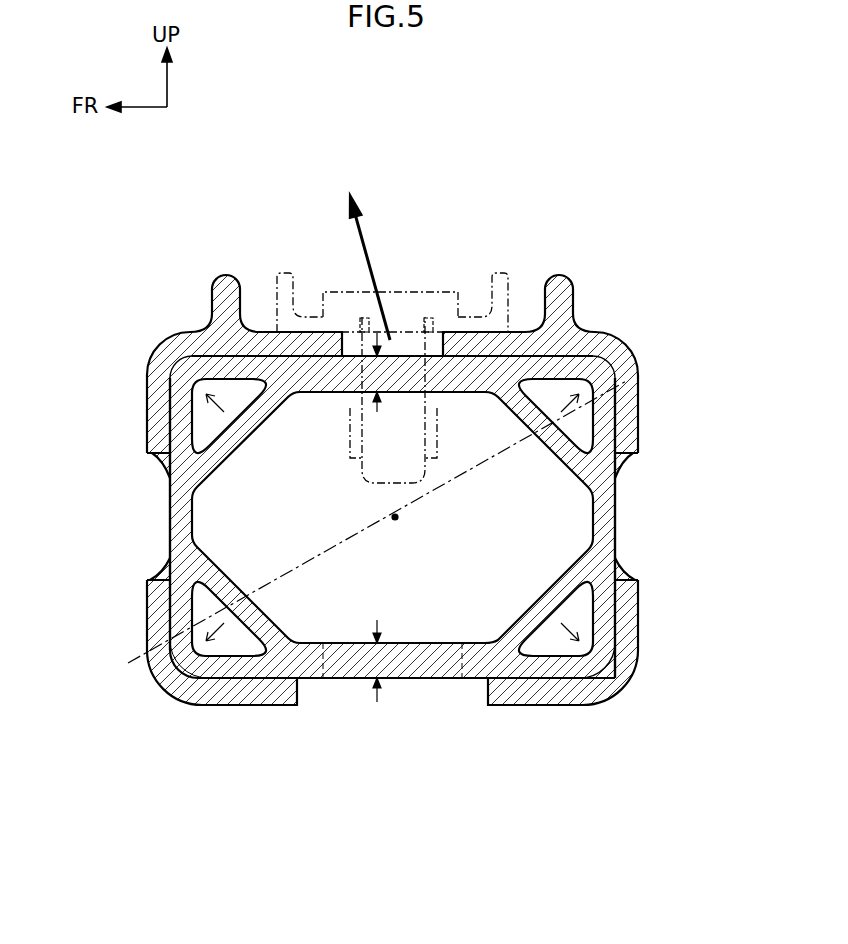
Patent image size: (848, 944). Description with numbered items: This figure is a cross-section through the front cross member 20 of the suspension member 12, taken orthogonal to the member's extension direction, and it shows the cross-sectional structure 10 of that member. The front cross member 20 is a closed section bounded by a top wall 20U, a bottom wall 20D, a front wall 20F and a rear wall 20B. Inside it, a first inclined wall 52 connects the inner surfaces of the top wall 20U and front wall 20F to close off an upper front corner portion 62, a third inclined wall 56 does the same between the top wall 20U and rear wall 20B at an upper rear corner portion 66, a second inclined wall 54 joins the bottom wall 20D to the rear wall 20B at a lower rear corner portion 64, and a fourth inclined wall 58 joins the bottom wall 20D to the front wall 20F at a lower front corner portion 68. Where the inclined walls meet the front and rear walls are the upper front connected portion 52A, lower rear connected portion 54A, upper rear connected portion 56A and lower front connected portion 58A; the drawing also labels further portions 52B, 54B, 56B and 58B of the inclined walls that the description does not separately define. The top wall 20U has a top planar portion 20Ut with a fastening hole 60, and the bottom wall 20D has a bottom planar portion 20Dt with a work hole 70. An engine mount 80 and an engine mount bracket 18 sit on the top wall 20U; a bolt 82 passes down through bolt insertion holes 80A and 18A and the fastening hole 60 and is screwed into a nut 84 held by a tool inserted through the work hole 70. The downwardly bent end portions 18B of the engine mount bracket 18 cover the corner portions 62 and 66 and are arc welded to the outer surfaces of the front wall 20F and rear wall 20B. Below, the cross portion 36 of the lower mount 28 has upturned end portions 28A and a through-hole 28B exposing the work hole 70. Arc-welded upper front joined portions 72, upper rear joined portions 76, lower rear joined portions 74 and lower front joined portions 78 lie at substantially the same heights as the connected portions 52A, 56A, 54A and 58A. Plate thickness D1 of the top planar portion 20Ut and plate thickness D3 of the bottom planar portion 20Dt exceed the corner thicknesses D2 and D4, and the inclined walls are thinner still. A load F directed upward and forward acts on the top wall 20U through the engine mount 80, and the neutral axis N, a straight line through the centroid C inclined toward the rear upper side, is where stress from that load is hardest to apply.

The cross-sectional structure 10 is at (160, 490).
The suspension member 12 is at (248, 268).
The engine mount bracket 18 is at (590, 322).
The bolt insertion hole 18A is at (245, 330).
The both end portions of engine mount bracket 18B is at (158, 428).
The front cross member 20 is at (620, 488).
The top wall 20U is at (462, 358).
The bottom wall 20D is at (400, 670).
The front wall 20F is at (170, 515).
The rear wall 20B is at (612, 518).
The top planar portion 20Ut is at (401, 400).
The bottom planar portion 20Dt is at (396, 640).
The lower mount 28 is at (552, 707).
The both end portions of cross portion of lower mount 28A is at (150, 620).
The through-hole 28B is at (485, 693).
The cross portion 36 is at (263, 708).
The first inclined wall 52 is at (243, 433).
The upper front connected portion 52A is at (208, 462).
The front upper rib inclined face 52B is at (290, 385).
The second inclined wall 54 is at (546, 592).
The lower rear connected portion 54A is at (596, 577).
The rear lower rib inclined face 54B is at (500, 650).
The third inclined wall 56 is at (575, 440).
The upper rear connected portion 56A is at (596, 462).
The rear upper rib inclined face 56B is at (506, 380).
The fourth inclined wall 58 is at (260, 620).
The lower front connected portion 58A is at (210, 556).
The front lower rib inclined face 58B is at (303, 645).
The fastening hole 60 is at (413, 332).
The upper front corner portion 62 is at (183, 378).
The lower rear corner portion 64 is at (598, 665).
The upper rear corner portion 66 is at (605, 368).
The lower front corner portion 68 is at (185, 663).
The work hole 70 is at (455, 680).
The upper front joined portions 72 is at (155, 462).
The lower rear joined portions 74 is at (630, 573).
The upper rear joined portions 76 is at (630, 463).
The lower front joined portions 78 is at (156, 572).
The engine mount 80 is at (509, 275).
The bolt insertion hole 80A is at (345, 300).
The bolt 82 is at (415, 292).
The nut 84 is at (350, 415).
The centroid C is at (398, 517).
The neutral axis N is at (128, 663).
The load F is at (366, 240).
The plate thickness of top planar portion D1 is at (379, 330).
The plate thickness of upper corner portions D2 is at (198, 385).
The plate thickness of bottom planar portion D3 is at (365, 683).
The plate thickness of lower corner portions D4 is at (203, 690).